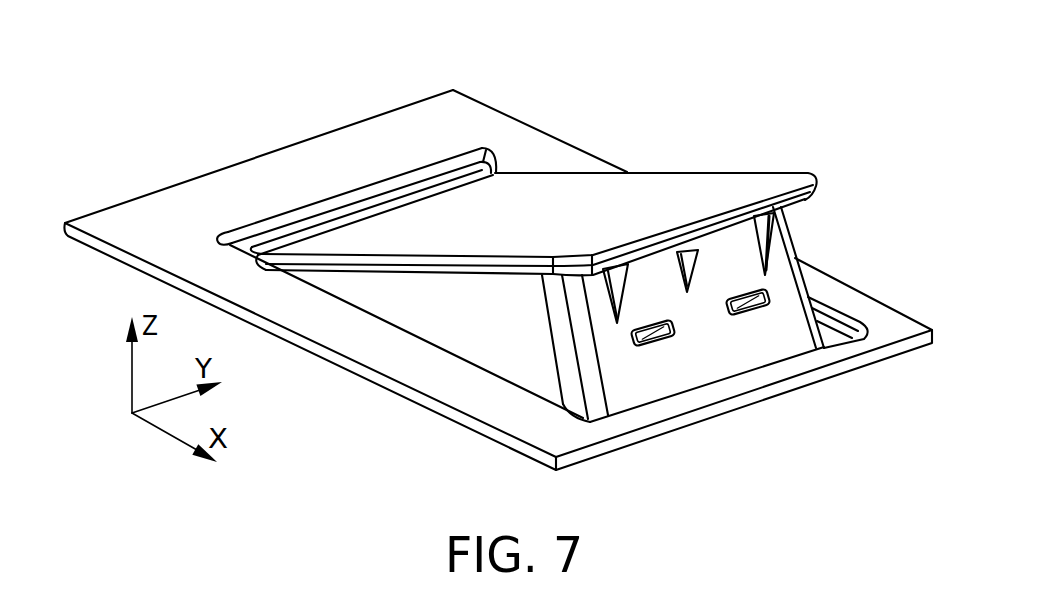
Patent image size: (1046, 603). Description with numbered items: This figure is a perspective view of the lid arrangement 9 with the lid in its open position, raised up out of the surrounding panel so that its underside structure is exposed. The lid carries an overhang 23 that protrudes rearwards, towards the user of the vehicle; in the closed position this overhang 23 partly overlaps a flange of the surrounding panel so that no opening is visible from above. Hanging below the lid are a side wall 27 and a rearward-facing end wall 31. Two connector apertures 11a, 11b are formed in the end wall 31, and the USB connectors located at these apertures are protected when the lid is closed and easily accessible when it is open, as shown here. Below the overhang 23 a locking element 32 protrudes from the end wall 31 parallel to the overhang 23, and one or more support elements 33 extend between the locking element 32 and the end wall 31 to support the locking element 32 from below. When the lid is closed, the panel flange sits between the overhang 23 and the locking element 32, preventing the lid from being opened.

The lid arrangement 9 is at (815, 73).
The overhang 23 is at (762, 207).
The side wall 27 is at (437, 299).
The end wall 31 is at (718, 349).
The locking element 32 is at (693, 245).
The support element 33 is at (612, 283).
The connector aperture 11a is at (664, 342).
The connector aperture 11b is at (757, 310).